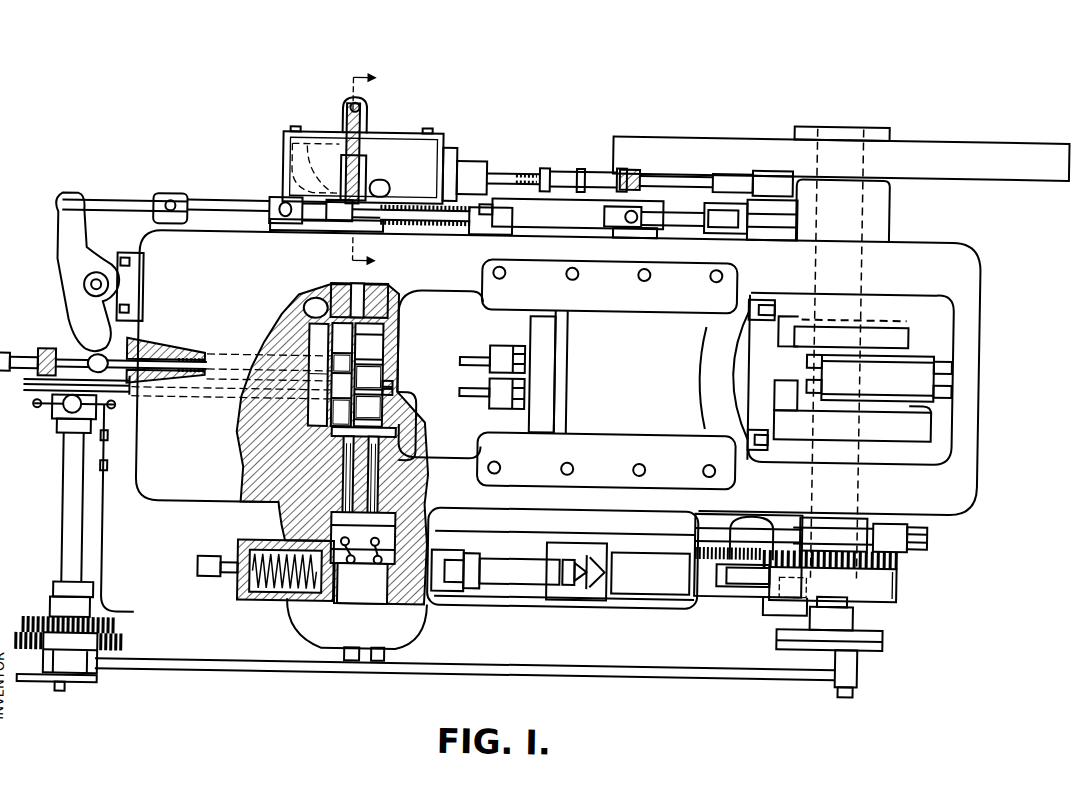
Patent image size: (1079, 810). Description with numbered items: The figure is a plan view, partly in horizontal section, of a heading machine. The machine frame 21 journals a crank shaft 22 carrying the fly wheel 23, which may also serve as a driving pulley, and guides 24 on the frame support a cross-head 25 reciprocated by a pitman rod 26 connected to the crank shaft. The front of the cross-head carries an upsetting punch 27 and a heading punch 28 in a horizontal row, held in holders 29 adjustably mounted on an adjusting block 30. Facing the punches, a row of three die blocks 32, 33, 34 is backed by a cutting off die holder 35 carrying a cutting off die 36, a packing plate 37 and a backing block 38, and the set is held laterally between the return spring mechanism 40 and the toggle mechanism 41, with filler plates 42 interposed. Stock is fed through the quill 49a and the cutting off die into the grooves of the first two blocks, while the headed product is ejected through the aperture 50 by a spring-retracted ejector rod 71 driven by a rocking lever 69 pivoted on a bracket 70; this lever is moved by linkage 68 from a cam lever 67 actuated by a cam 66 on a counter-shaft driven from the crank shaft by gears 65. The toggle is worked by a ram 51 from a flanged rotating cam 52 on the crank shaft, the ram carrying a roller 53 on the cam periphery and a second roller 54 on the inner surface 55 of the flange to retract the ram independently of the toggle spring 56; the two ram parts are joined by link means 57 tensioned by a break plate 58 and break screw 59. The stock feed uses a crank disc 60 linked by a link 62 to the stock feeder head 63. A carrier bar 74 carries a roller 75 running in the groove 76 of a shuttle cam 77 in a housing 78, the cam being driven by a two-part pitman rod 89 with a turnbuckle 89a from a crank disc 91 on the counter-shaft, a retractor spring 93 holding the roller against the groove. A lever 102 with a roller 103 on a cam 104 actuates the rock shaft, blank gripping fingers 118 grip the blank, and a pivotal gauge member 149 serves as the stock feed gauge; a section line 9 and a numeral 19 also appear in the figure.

The section line 9 is at (355, 174).
The adjusting handle 19 is at (26, 394).
The machine frame 21 is at (539, 449).
The crank shaft 22 is at (864, 252).
The fly wheel 23 is at (841, 159).
The guides 24 is at (608, 374).
The cross-head 25 is at (664, 377).
The pitman rod 26 is at (879, 378).
The upsetting punch 27 is at (463, 387).
The heading punch 28 is at (463, 356).
The holders 29 is at (507, 378).
The adjusting block 30 is at (548, 372).
The die block 32 is at (368, 406).
The die block 33 is at (368, 376).
The die block 34 is at (369, 374).
The cutting off die holder 35 is at (342, 363).
The cutting off die 36 is at (341, 412).
The packing plate 37 is at (333, 372).
The backing block 38 is at (318, 375).
The return spring mechanism 40 is at (419, 203).
The toggle mechanism 41 is at (396, 563).
The filler plates 42 is at (389, 318).
The quill 49a is at (187, 398).
The aperture 50 is at (342, 374).
The ram 51 is at (495, 571).
The flanged rotating cam 52 is at (833, 584).
The roller 53 is at (742, 575).
The second roller 54 is at (790, 606).
The inner surface 55 is at (900, 580).
The toggle spring 56 is at (253, 597).
The link means 57 is at (588, 594).
The break plate 58 is at (614, 567).
The break screw 59 is at (572, 575).
The crank disc 60 is at (884, 628).
The link 62 is at (743, 670).
The stock feeder head 63 is at (117, 634).
The gears 65 is at (770, 510).
The cam 66 is at (797, 210).
The cam lever 67 is at (688, 212).
The linkage 68 is at (130, 201).
The ejector actuating rocking lever 69 is at (86, 280).
The bracket 70 is at (116, 256).
The ejector rod 71 is at (150, 340).
The carrier bar 74 is at (360, 160).
The roller 75 is at (362, 178).
The groove 76 is at (320, 184).
The shuttle cam 77 is at (455, 150).
The housing 78 is at (362, 165).
The pitman rod 89 is at (512, 167).
The turnbuckle 89a is at (586, 162).
The crank disc 91 is at (786, 188).
The retractor spring 93 is at (367, 112).
The lever 102 is at (920, 540).
The roller 103 is at (896, 515).
The cam 104 is at (843, 520).
The blank gripping fingers 118 is at (397, 382).
The pivotal gauge member 149 is at (420, 428).